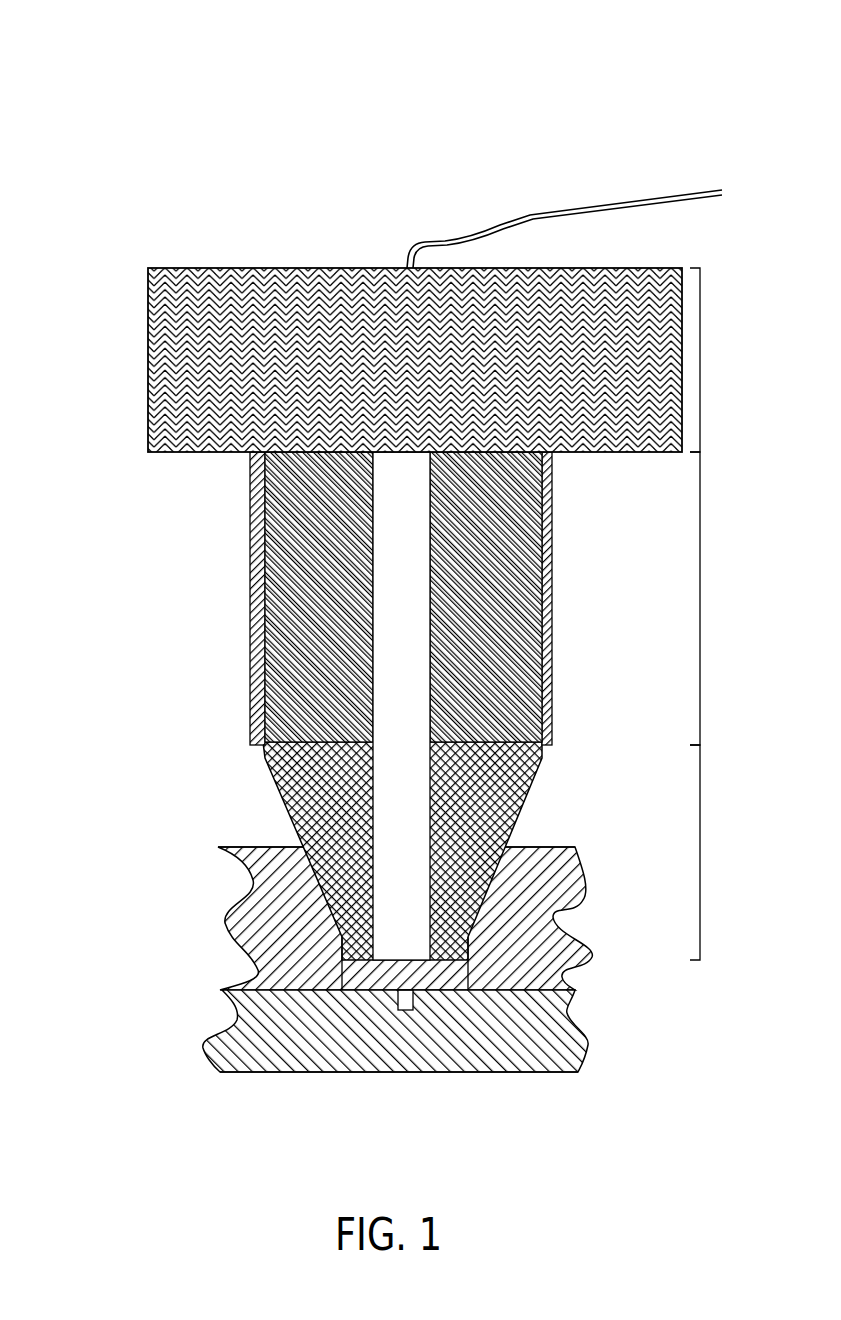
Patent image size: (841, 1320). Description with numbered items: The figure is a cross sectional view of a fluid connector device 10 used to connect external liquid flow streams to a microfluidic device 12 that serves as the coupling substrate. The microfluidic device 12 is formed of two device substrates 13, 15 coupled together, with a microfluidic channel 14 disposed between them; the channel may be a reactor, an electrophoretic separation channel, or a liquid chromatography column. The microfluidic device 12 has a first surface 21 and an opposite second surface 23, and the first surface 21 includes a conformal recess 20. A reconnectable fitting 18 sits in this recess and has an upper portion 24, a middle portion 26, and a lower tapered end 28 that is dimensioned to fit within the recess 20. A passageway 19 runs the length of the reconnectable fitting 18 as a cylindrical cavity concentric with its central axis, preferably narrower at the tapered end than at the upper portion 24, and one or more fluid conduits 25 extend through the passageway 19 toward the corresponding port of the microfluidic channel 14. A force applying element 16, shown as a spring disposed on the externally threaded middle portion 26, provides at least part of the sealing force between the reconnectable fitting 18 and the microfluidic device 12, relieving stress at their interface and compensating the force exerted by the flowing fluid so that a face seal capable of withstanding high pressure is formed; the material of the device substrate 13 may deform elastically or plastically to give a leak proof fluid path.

The fluid connector device 10 is at (435, 570).
The microfluidic device 12 is at (398, 971).
The device substrate 13 is at (207, 847).
The microfluidic channel 14 is at (403, 1013).
The device substrate 15 is at (207, 990).
The force applying element 16 is at (553, 592).
The reconnectable fitting 18 is at (146, 345).
The passageway 19 is at (417, 670).
The recess 20 is at (497, 872).
The first surface 21 is at (575, 847).
The second surface 23 is at (563, 1072).
The upper portion 24 is at (700, 358).
The fluid conduit 25 is at (527, 216).
The middle portion 26 is at (700, 600).
The lower tapered end 28 is at (700, 852).